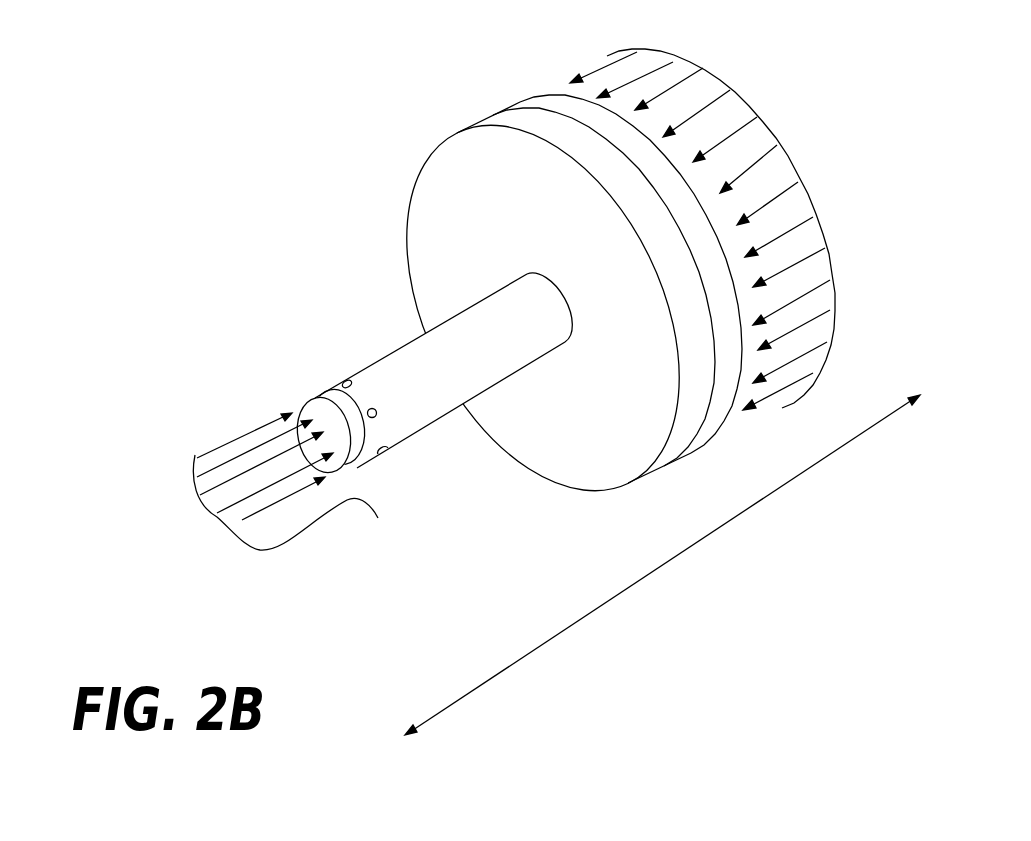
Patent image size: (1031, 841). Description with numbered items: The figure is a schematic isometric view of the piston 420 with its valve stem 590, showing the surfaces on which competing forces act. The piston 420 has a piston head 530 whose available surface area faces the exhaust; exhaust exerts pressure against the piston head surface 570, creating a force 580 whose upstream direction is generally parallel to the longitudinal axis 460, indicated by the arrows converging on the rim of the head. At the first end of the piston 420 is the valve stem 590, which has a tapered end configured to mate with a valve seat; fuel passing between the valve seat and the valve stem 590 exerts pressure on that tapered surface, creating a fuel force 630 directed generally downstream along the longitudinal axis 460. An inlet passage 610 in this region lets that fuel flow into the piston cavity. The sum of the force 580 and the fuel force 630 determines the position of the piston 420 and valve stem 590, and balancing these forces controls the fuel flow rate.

The piston 420 is at (277, 160).
The longitudinal axis 460 is at (765, 497).
The piston head 530 is at (440, 226).
The piston head surface 570 is at (727, 423).
The force 580 is at (787, 158).
The valve stem 590 is at (300, 370).
The inlet passage 610 is at (347, 368).
The fuel force 630 is at (300, 502).